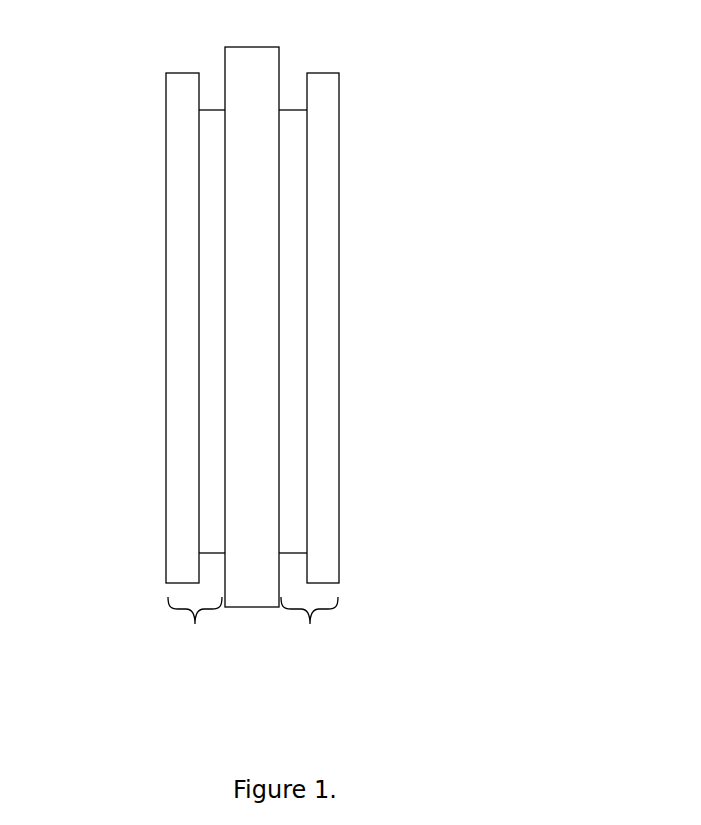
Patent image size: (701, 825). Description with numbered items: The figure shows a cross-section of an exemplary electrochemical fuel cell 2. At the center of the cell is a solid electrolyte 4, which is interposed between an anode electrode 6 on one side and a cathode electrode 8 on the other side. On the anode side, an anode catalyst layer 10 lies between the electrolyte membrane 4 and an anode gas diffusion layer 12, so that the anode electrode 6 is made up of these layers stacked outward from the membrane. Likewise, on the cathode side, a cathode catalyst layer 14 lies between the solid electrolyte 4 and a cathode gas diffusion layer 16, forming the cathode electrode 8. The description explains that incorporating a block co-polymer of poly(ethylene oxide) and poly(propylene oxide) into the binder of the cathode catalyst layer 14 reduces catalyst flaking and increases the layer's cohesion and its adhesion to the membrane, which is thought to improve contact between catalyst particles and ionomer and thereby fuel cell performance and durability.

The electrochemical fuel cell 2 is at (542, 132).
The solid electrolyte 4 is at (265, 63).
The anode electrode 6 is at (195, 628).
The cathode electrode 8 is at (309, 628).
The anode catalyst layer 10 is at (190, 223).
The anode gas diffusion layer 12 is at (161, 90).
The cathode catalyst layer 14 is at (307, 332).
The cathode gas diffusion layer 16 is at (325, 403).